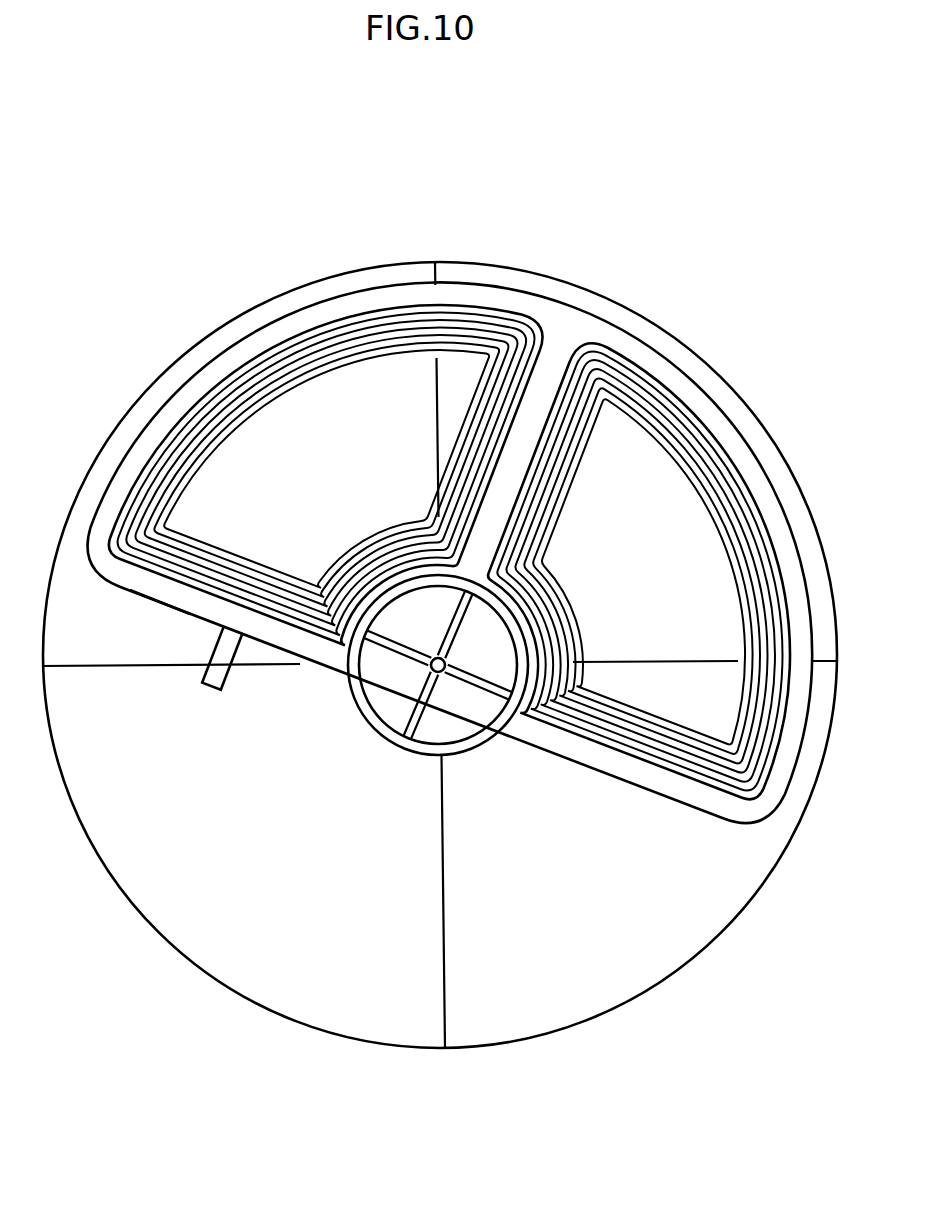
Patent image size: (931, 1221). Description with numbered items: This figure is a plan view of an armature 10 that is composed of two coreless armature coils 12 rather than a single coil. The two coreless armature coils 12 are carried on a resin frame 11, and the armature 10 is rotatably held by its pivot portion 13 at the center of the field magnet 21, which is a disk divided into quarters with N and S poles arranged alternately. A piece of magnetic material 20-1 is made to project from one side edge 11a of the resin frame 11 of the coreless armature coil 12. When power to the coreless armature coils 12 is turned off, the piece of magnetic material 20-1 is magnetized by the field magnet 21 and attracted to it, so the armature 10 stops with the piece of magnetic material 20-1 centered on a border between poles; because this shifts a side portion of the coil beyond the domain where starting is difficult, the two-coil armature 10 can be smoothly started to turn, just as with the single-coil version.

The armature 10 is at (455, 500).
The resin frame 11 is at (160, 413).
The side edge 11a is at (158, 610).
The coreless armature coil 12 is at (387, 330).
The pivot portion 13 is at (384, 733).
The piece of magnetic material 20-1 is at (228, 668).
The field magnet 21 is at (680, 963).